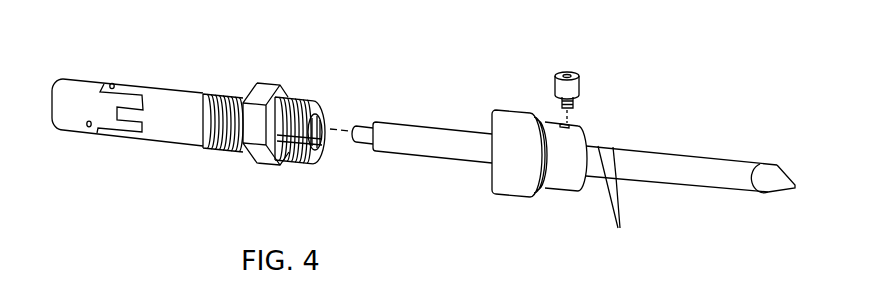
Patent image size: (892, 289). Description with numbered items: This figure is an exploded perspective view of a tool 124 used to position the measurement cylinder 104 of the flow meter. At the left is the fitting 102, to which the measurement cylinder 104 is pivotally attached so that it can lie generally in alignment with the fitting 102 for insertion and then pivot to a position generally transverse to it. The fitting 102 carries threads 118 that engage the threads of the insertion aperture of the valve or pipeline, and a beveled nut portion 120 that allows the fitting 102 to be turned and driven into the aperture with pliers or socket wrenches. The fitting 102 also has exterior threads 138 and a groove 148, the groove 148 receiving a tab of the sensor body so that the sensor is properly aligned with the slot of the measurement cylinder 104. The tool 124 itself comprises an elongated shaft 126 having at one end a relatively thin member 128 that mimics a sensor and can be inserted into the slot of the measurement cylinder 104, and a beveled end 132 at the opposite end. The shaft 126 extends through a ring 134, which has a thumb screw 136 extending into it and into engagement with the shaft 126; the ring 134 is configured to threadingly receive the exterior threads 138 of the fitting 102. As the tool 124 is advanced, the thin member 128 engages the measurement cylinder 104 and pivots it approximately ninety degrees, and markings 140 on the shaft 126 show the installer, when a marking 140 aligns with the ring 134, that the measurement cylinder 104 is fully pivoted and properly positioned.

The fitting 102 is at (152, 92).
The measurement cylinder 104 is at (78, 85).
The threads 118 is at (228, 95).
The beveled nut portion 120 is at (268, 88).
The exterior threads 138 is at (294, 101).
The groove 148 is at (290, 141).
The thin member 128 is at (361, 130).
The elongated shaft 126 is at (406, 127).
The ring 134 is at (517, 185).
The thumb screw 136 is at (572, 74).
The tool 124 is at (675, 104).
The beveled end 132 is at (773, 172).
The markings 140 is at (620, 228).